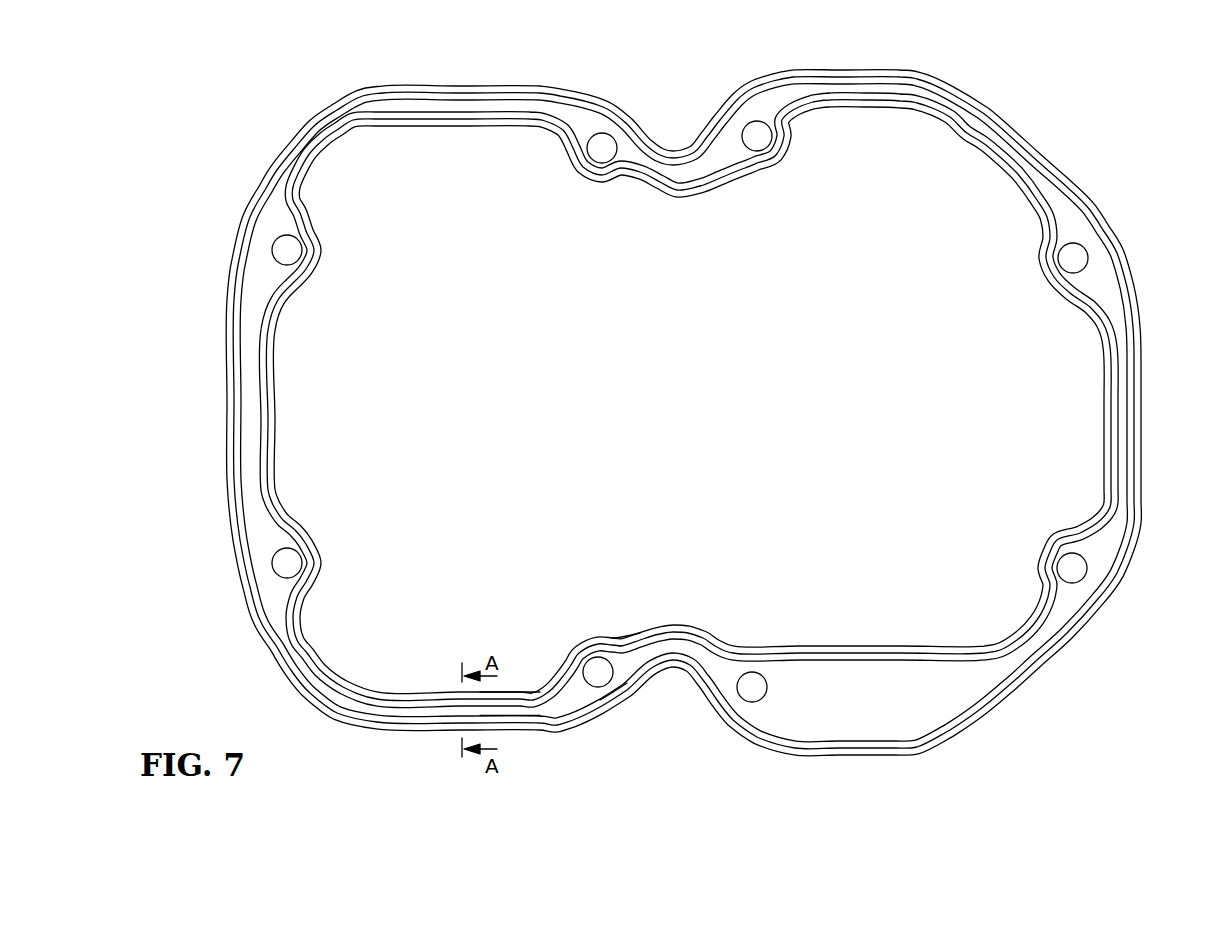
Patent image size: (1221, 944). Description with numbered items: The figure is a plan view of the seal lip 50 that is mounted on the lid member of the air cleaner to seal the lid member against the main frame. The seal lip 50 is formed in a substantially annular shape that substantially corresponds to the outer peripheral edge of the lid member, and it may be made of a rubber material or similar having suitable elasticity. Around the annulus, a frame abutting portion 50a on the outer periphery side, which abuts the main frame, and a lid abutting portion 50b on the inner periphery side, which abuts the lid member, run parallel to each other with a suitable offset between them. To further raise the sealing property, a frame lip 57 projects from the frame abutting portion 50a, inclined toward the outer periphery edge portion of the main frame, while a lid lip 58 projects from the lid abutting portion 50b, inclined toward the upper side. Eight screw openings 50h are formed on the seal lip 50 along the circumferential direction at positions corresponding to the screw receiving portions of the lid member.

The seal lip 50 is at (636, 104).
The screw openings 50h is at (600, 152).
The frame abutting portion 50a is at (517, 710).
The lid abutting portion 50b is at (517, 703).
The frame lip 57 is at (617, 705).
The lid lip 58 is at (628, 644).